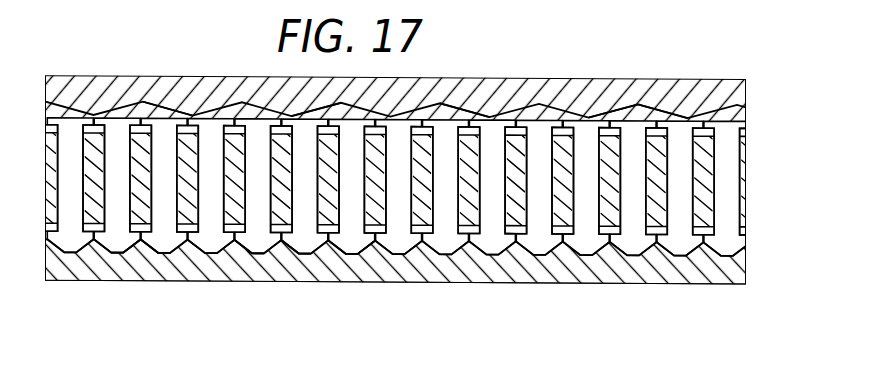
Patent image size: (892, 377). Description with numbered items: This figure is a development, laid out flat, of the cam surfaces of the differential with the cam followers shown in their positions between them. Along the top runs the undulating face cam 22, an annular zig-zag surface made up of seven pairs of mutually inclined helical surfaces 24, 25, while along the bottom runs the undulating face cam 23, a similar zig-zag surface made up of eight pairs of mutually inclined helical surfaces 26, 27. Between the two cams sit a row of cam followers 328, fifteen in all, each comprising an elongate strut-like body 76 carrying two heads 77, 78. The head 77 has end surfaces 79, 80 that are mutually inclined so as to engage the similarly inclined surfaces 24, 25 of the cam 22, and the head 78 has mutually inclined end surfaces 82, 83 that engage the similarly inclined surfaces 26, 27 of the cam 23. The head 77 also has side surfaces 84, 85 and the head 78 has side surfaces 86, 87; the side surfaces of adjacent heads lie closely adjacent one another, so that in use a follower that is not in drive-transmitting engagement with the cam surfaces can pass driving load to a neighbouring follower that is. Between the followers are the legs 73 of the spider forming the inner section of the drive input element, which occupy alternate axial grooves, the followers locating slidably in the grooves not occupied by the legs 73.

The undulating face cam 22 is at (637, 95).
The undulating face cam 23 is at (540, 268).
The helical surface 24 is at (613, 110).
The helical surface 25 is at (657, 112).
The helical surface 26 is at (240, 255).
The helical surface 27 is at (300, 262).
The cam follower 328 is at (303, 228).
The leg 73 is at (533, 145).
The strut-like body 76 is at (254, 177).
The head 77 is at (177, 112).
The head 78 is at (140, 243).
The end surface 79 is at (162, 120).
The end surface 80 is at (176, 114).
The end surface 82 is at (127, 260).
The end surface 83 is at (160, 243).
The side surface 84 is at (318, 112).
The side surface 85 is at (492, 113).
The side surface 86 is at (356, 241).
The side surface 87 is at (363, 242).